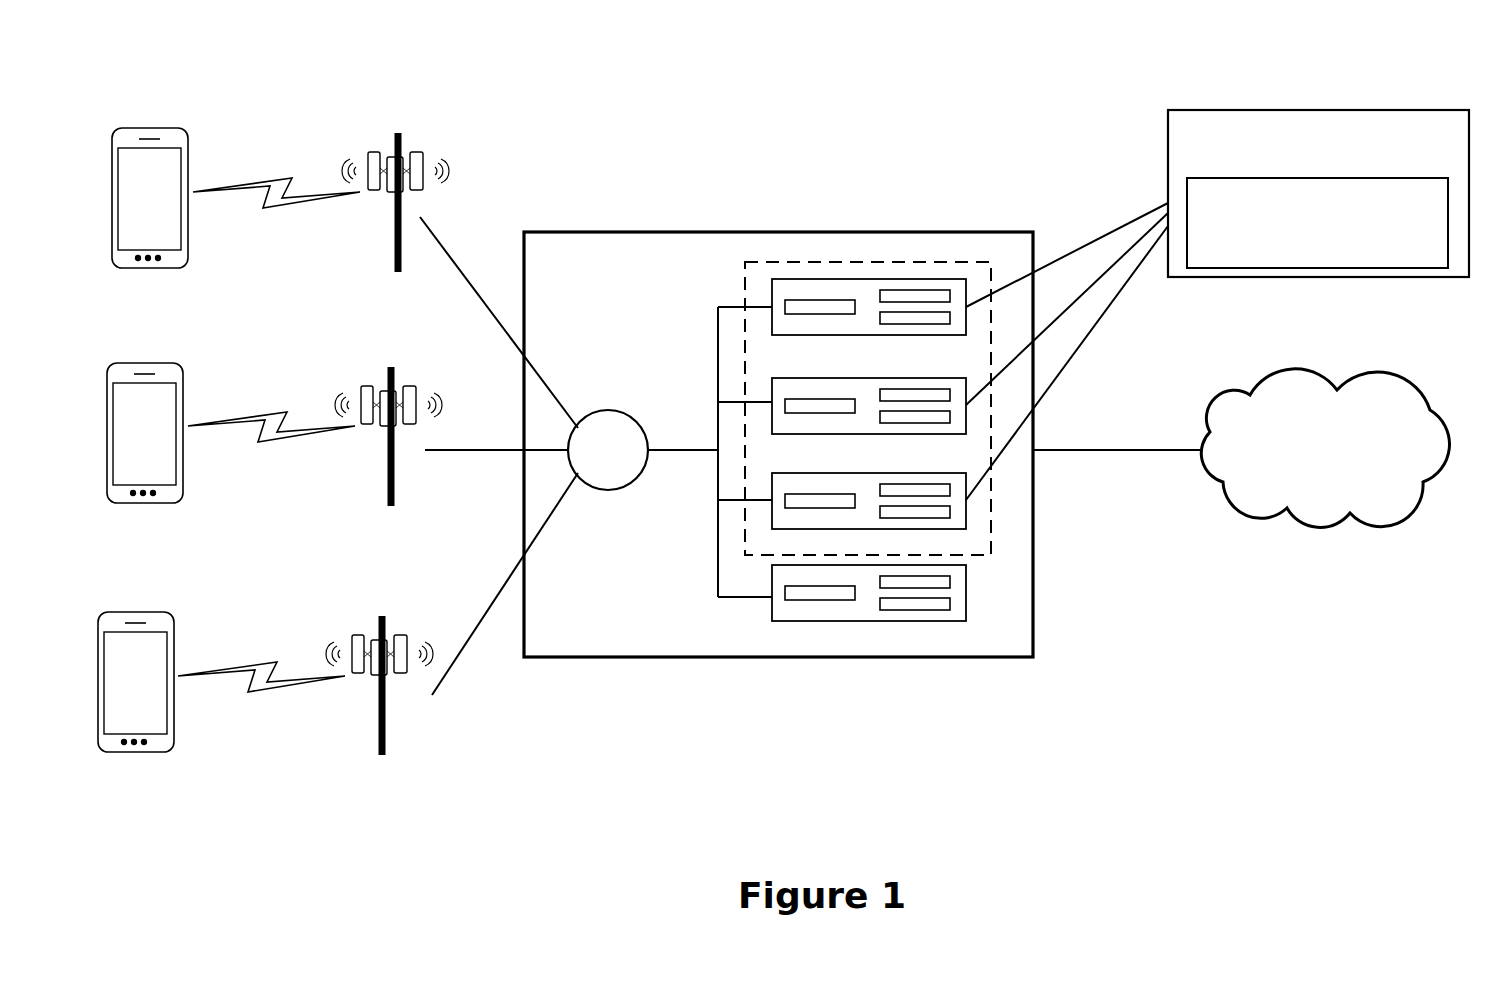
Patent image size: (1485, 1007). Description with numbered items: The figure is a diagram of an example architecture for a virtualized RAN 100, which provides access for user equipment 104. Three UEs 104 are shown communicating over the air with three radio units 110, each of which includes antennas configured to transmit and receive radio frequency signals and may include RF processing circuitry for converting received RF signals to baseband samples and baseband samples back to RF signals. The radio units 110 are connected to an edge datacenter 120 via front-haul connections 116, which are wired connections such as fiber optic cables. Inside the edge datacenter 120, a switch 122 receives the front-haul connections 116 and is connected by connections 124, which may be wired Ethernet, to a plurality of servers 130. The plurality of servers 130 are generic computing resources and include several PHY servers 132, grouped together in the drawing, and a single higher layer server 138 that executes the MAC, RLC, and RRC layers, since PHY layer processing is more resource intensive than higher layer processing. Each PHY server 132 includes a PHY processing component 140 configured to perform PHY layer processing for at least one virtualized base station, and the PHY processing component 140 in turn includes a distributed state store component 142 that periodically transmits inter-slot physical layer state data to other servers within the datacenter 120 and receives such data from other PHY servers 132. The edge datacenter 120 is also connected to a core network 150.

The virtualized RAN 100 is at (1374, 66).
The user equipment 104 is at (157, 128).
The radio units 110 is at (394, 150).
The front-haul connections 116 is at (484, 305).
The edge datacenter 120 is at (785, 231).
The switch 122 is at (624, 410).
The connections 124 is at (705, 449).
The plurality of servers 130 is at (852, 407).
The PHY servers 132 is at (937, 262).
The higher layer server 138 is at (967, 603).
The PHY processing component 140 is at (1264, 172).
The distributed state store component 142 is at (1187, 192).
The core network 150 is at (1313, 372).